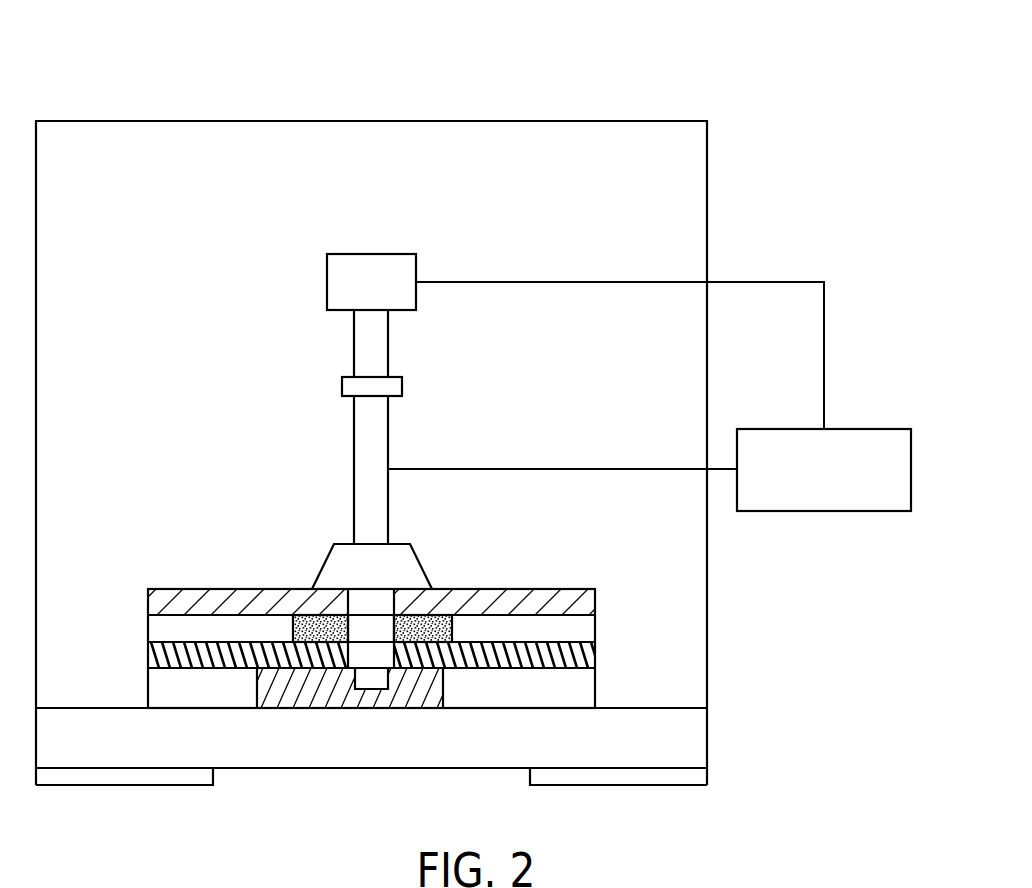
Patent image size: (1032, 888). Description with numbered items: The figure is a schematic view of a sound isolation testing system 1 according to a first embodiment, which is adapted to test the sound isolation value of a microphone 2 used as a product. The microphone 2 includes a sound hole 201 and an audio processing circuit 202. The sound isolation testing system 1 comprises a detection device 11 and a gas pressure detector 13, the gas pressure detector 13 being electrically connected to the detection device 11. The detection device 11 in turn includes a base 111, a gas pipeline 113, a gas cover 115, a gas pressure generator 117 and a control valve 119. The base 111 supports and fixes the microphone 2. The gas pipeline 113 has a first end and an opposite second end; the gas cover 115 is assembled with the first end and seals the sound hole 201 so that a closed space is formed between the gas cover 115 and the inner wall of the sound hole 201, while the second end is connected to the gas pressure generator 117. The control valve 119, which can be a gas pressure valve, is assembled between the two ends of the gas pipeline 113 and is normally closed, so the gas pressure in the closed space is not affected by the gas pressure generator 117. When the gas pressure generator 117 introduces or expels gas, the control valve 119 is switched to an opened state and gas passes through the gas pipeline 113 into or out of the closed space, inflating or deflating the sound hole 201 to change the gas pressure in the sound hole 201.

The sound isolation testing system 1 is at (784, 43).
The detection device 11 is at (206, 136).
The base 111 is at (700, 737).
The gas pipeline 113 is at (357, 460).
The gas cover 115 is at (330, 571).
The gas pressure generator 117 is at (327, 284).
The control valve 119 is at (342, 387).
The gas pressure detector 13 is at (823, 511).
The microphone 2 is at (450, 676).
The sound hole 201 is at (375, 633).
The audio processing circuit 202 is at (418, 698).